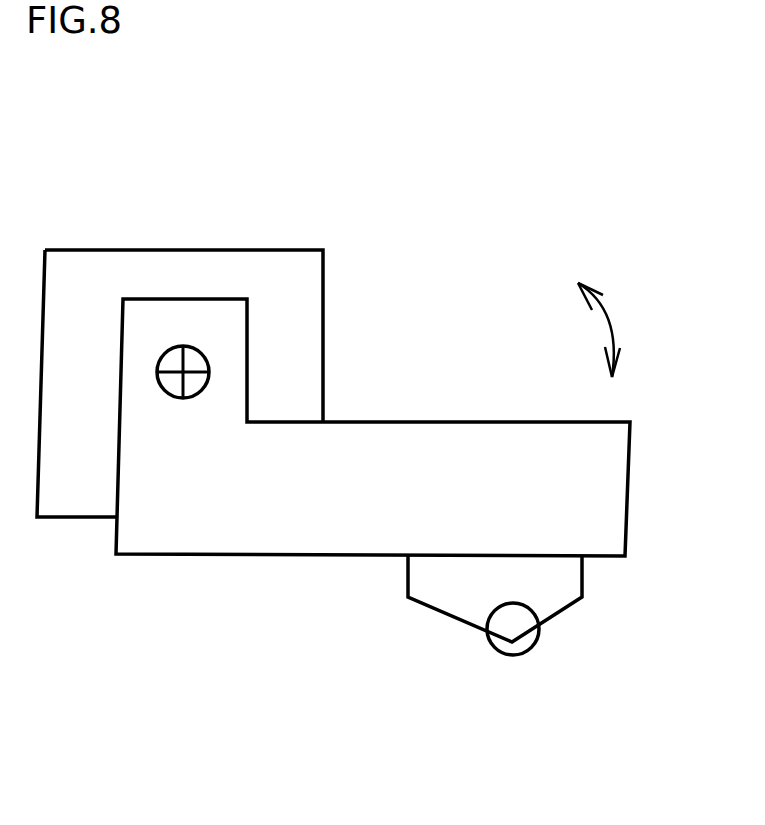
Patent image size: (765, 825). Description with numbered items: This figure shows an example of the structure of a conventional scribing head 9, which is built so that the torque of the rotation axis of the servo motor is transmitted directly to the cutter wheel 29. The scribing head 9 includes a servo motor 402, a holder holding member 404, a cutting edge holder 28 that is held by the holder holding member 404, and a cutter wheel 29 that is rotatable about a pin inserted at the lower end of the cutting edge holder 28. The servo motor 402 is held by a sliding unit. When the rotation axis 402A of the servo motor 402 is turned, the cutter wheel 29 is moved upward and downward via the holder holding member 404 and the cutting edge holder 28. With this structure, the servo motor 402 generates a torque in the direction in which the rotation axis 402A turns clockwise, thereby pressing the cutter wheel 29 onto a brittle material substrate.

The scribing head 9 is at (37, 198).
The servo motor 402 is at (258, 250).
The rotation axis 402A is at (194, 399).
The holder holding member 404 is at (327, 554).
The cutting edge holder 28 is at (585, 587).
The cutter wheel 29 is at (509, 655).